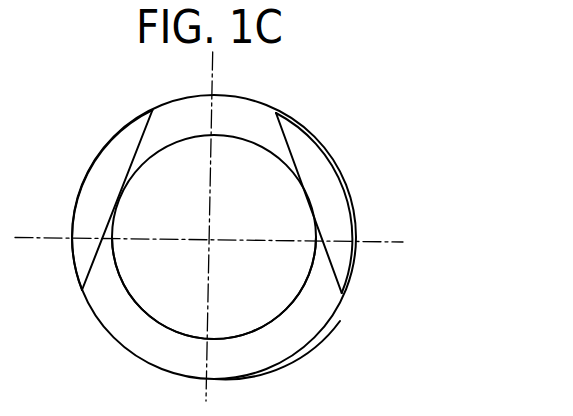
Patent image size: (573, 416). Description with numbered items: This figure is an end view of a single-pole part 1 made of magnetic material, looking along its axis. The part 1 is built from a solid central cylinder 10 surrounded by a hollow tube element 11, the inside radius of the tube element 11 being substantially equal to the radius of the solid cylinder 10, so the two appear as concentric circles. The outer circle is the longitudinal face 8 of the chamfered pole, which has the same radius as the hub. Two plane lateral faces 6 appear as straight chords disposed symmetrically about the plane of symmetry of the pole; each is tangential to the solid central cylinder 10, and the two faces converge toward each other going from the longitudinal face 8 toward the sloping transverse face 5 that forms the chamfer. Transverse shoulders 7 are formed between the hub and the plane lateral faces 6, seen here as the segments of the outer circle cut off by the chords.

The single-pole part 1 is at (353, 178).
The sloping transverse face 5 is at (275, 282).
The plane lateral faces 6 is at (292, 150).
The transverse shoulders 7 is at (105, 175).
The longitudinal face 8 is at (288, 357).
The solid central cylinder 10 is at (153, 283).
The hollow tube element 11 is at (148, 343).